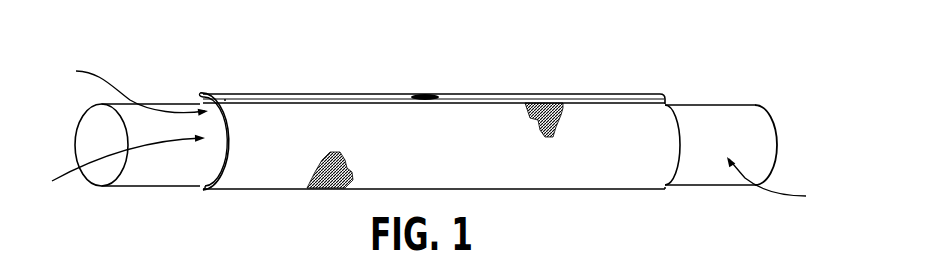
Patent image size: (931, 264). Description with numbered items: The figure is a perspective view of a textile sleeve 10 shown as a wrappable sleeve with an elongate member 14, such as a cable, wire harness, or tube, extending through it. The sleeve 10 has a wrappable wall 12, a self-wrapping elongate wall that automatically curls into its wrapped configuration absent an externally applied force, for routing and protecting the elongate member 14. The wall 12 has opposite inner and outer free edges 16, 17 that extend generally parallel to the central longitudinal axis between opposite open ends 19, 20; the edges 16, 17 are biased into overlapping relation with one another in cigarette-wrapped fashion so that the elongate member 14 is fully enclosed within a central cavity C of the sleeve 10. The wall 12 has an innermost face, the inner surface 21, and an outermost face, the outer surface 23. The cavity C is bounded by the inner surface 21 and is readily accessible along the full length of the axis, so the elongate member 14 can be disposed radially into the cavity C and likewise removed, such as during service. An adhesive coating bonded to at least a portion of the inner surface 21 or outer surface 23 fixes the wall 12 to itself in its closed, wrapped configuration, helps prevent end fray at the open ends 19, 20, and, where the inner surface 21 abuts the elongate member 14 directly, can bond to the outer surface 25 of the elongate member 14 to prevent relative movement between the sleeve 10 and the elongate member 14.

The sleeve 10 is at (564, 71).
The wrappable wall 12 is at (322, 84).
The elongate member 14 is at (716, 118).
The inner free edge 16 is at (200, 96).
The outer free edge 17 is at (224, 100).
The open end 19 is at (198, 187).
The open end 20 is at (664, 188).
The inner surface 21 is at (131, 88).
The outer surface 23 is at (470, 92).
The outer surface of elongate member 25 is at (778, 182).
The central cavity C is at (120, 167).